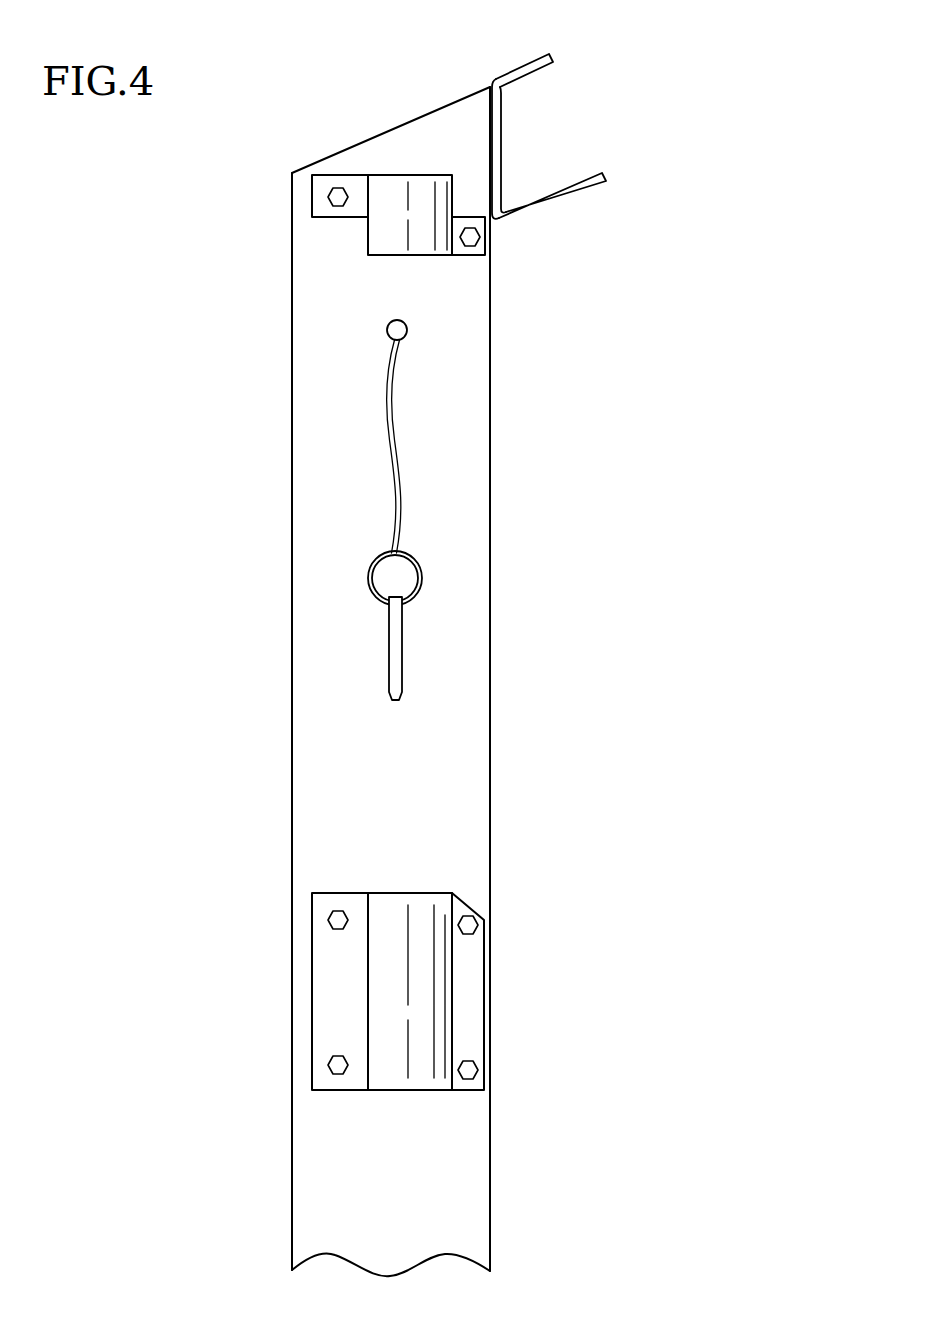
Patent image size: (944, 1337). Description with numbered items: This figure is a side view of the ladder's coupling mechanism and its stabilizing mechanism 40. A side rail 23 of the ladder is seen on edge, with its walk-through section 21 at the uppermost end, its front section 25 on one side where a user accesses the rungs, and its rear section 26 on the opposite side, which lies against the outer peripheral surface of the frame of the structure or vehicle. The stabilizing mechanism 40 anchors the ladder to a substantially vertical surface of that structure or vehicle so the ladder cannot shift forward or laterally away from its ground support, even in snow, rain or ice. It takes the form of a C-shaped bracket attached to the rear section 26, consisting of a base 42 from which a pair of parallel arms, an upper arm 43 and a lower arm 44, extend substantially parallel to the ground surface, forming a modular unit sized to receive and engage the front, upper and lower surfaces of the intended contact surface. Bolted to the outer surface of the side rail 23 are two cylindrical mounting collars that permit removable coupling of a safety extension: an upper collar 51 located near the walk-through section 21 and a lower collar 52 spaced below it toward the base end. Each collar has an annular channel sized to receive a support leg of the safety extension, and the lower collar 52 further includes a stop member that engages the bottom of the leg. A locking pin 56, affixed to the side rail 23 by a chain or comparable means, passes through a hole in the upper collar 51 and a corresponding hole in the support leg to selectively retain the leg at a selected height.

The stabilizing mechanism 40 is at (498, 144).
The walk-through section 21 is at (342, 152).
The side rail 23 is at (473, 432).
The front section 25 is at (292, 825).
The rear section 26 is at (490, 821).
The base 42 is at (501, 152).
The upper arm 43 is at (541, 37).
The lower arm 44 is at (547, 213).
The upper collar 51 is at (418, 247).
The lower collar 52 is at (425, 1025).
The locking pin 56 is at (402, 665).